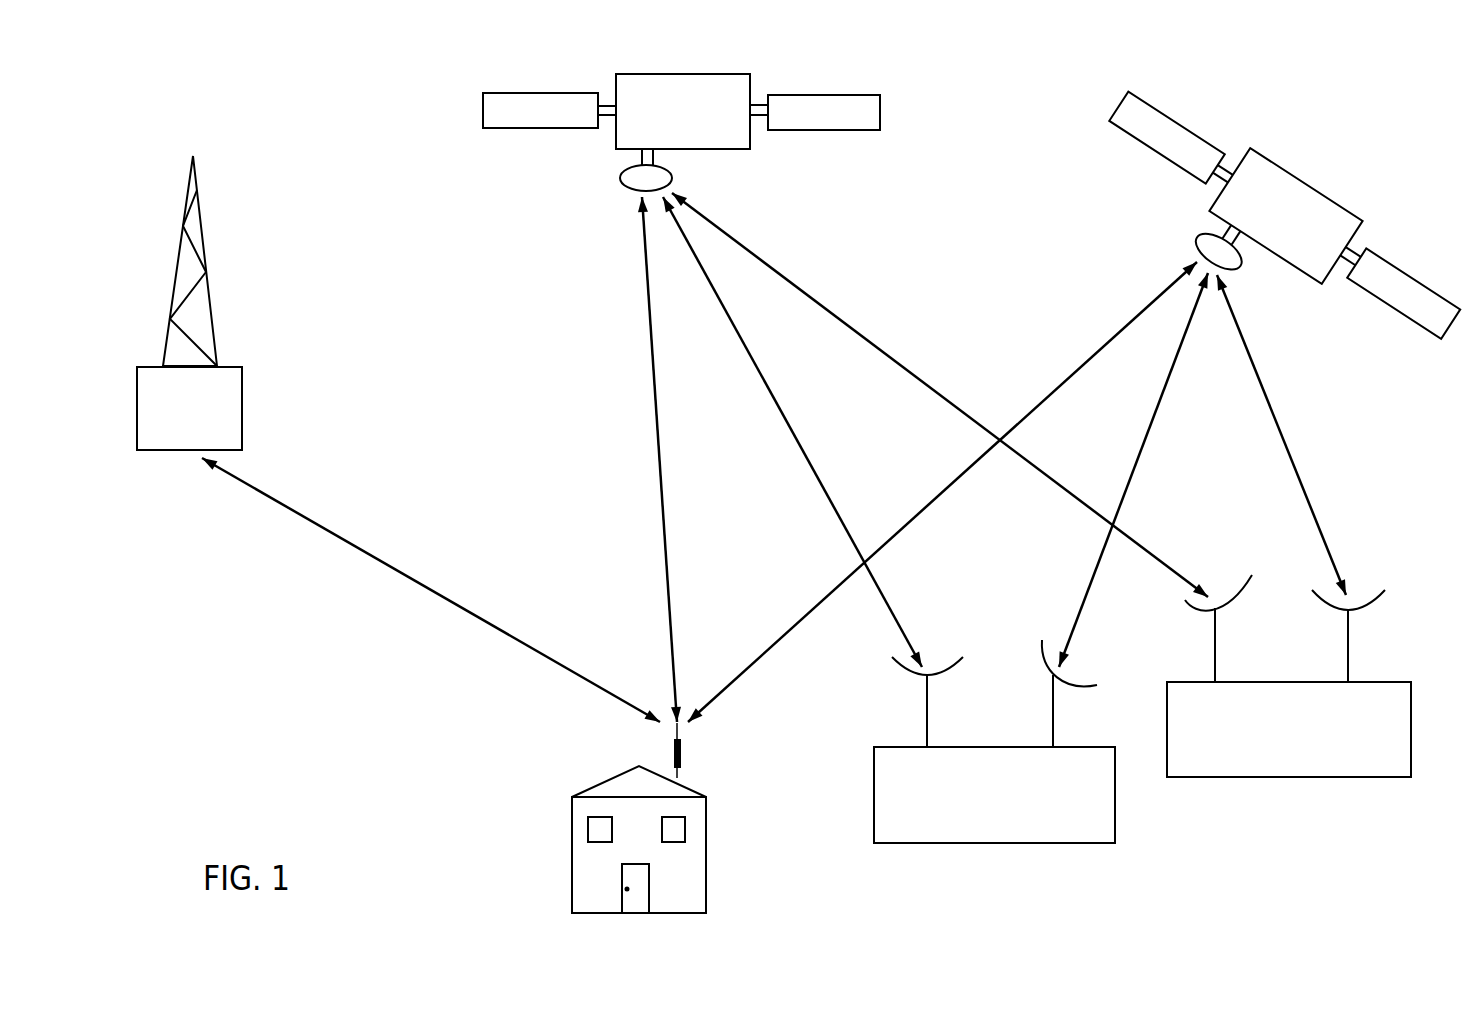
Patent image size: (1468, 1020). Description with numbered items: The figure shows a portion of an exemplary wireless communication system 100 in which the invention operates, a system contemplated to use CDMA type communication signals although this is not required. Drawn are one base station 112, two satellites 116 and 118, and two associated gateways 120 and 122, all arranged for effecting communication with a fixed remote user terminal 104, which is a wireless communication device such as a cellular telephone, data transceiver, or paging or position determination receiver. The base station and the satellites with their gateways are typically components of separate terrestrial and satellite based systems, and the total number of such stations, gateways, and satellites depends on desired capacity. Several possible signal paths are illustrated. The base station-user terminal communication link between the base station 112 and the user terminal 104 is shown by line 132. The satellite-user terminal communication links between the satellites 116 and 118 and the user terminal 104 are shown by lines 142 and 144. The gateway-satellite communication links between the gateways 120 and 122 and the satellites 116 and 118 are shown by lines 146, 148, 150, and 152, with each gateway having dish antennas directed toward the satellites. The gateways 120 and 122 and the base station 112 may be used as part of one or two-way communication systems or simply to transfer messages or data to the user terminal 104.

The communication system 100 is at (232, 103).
The fixed remote user terminal 104 is at (602, 785).
The base station 112 is at (233, 366).
The satellite 116 is at (858, 95).
The satellite 118 is at (1392, 265).
The gateway 120 is at (1093, 843).
The second gateway 122 is at (1373, 777).
The base station-user terminal communication link 132 is at (253, 483).
The satellite-user terminal communication link 142 is at (658, 438).
The satellite-user terminal communication link 144 is at (797, 620).
The gateway-satellite communication link 146 is at (803, 447).
The satellite-gateway link 148 is at (883, 353).
The gateway-satellite communication link 150 is at (1140, 443).
The gateway-satellite communication link 152 is at (1293, 463).